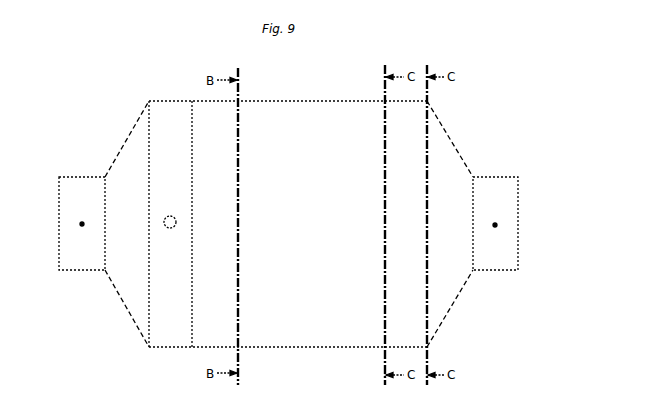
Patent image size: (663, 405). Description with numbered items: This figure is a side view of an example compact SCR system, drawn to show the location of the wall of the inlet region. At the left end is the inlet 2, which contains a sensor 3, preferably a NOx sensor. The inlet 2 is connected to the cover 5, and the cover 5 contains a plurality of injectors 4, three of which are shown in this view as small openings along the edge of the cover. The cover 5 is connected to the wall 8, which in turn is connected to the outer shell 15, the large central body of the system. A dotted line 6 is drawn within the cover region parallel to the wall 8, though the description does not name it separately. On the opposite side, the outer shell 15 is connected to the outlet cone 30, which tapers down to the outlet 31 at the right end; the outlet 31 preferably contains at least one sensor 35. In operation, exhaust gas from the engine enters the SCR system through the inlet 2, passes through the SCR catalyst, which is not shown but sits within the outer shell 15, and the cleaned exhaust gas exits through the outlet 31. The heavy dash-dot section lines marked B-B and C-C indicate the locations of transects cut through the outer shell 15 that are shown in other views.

The inlet 2 is at (82, 223).
The sensor 3 is at (81, 227).
The injectors 4 is at (168, 228).
The cover 5 is at (127, 224).
The fold line 6 is at (194, 218).
The wall 8 is at (184, 99).
The outer shell 15 is at (309, 224).
The outlet cone 30 is at (450, 224).
The outlet 31 is at (495, 223).
The sensor 35 is at (495, 228).